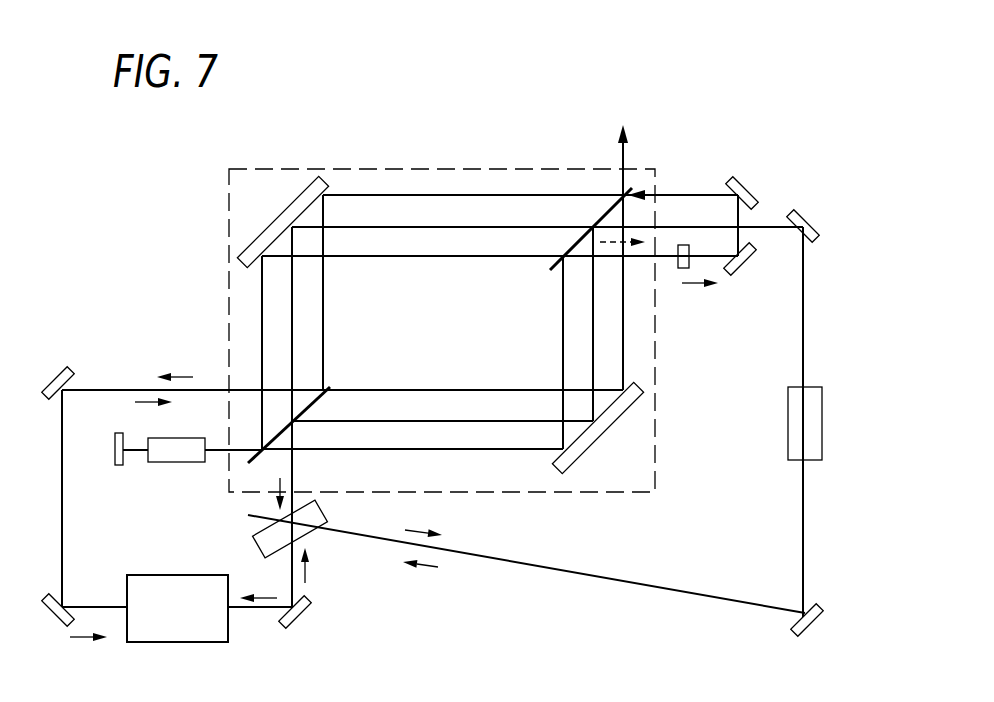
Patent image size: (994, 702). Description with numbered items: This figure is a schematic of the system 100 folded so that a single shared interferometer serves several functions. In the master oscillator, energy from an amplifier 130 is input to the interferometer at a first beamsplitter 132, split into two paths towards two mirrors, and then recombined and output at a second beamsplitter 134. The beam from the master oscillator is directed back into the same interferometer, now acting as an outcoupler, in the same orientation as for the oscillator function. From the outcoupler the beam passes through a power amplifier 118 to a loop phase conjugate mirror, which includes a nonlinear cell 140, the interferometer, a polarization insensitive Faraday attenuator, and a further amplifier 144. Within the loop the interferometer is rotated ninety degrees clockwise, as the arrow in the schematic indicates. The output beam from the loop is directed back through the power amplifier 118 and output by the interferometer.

The optical oscillator system 100 is at (778, 104).
The power amplifier 118 is at (164, 575).
The amplifier 130 is at (157, 440).
The first beamsplitter 132 is at (326, 385).
The second beamsplitter 134 is at (552, 266).
The nonlinear cell 140 is at (325, 511).
The amplifier 144 is at (800, 387).